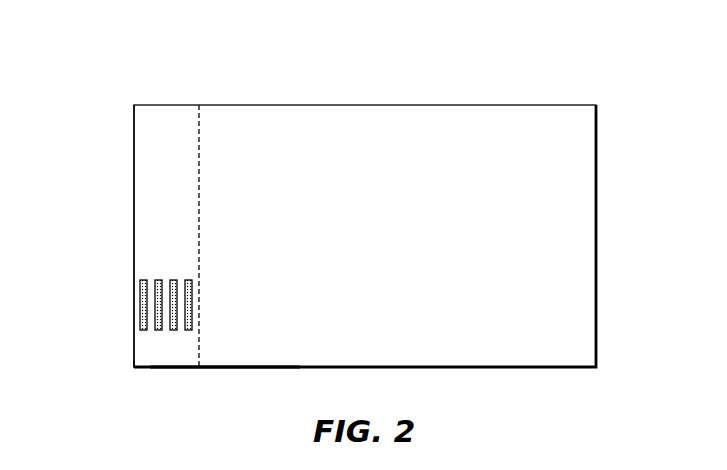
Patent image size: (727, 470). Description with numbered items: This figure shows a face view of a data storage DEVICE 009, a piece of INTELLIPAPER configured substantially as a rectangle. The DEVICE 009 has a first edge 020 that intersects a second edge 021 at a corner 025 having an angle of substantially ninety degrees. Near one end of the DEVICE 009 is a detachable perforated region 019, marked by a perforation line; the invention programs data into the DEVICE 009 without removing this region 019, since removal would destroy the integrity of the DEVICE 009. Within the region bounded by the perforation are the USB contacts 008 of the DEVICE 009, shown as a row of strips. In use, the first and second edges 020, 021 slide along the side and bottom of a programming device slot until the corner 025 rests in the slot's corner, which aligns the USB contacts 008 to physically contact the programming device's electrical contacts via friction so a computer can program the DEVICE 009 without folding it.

The DEVICE 009 is at (597, 143).
The detachable perforated region 019 is at (165, 128).
The first edge 020 is at (133, 200).
The USB contacts 008 is at (155, 307).
The corner 025 is at (134, 367).
The second edge 021 is at (165, 367).